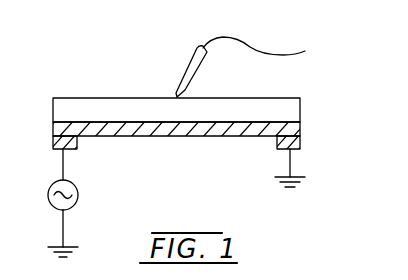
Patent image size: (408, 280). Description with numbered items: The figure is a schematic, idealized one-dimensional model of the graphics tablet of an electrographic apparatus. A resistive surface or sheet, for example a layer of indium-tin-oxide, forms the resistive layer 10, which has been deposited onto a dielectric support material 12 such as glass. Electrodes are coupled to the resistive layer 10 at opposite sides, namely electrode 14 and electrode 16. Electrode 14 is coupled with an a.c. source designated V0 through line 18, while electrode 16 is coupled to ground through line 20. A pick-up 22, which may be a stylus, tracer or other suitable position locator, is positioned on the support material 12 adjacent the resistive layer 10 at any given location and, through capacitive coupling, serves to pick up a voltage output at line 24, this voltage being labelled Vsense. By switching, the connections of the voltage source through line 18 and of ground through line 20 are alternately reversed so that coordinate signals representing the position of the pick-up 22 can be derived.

The resistive layer 10 is at (205, 136).
The dielectric support material 12 is at (241, 98).
The electrode 14 is at (52, 141).
The electrode 16 is at (302, 141).
The line 18 is at (66, 163).
The line 20 is at (296, 166).
The pick-up 22 is at (190, 57).
The line 24 is at (249, 47).